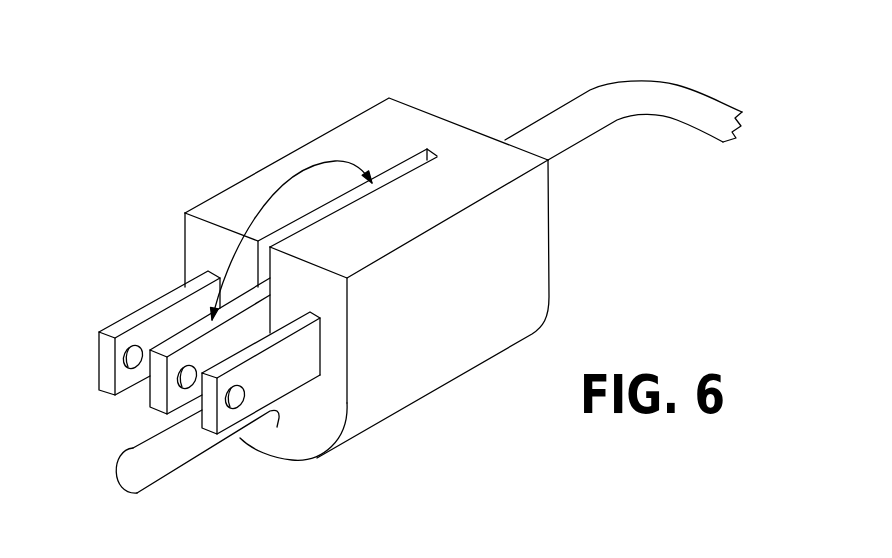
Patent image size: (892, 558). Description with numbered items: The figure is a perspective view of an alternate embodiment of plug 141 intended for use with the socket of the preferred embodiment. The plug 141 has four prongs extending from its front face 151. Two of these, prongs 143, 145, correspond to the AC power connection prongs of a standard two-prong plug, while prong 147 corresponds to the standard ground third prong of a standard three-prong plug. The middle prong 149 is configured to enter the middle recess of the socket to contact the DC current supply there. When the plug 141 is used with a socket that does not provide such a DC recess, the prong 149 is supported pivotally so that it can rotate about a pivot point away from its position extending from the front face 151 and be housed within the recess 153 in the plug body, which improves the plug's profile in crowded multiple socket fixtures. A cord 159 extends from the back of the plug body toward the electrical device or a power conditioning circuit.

The plug 141 is at (483, 338).
The prong 143 is at (123, 327).
The prong 145 is at (285, 375).
The prong 147 is at (203, 458).
The middle prong 149 is at (148, 411).
The front face 151 is at (337, 353).
The recess 153 is at (398, 172).
The cord 159 is at (637, 95).